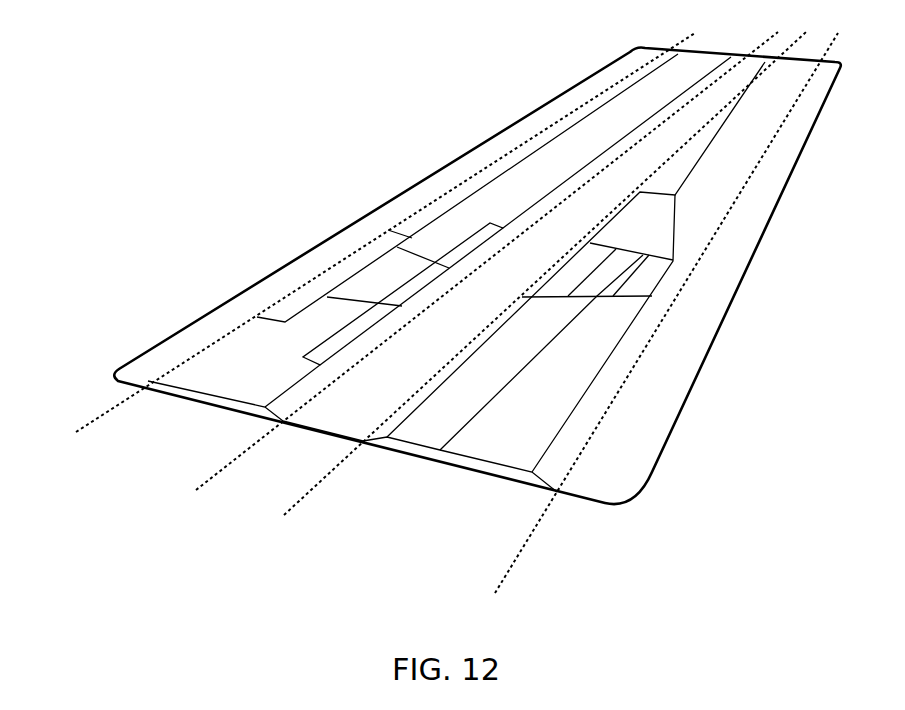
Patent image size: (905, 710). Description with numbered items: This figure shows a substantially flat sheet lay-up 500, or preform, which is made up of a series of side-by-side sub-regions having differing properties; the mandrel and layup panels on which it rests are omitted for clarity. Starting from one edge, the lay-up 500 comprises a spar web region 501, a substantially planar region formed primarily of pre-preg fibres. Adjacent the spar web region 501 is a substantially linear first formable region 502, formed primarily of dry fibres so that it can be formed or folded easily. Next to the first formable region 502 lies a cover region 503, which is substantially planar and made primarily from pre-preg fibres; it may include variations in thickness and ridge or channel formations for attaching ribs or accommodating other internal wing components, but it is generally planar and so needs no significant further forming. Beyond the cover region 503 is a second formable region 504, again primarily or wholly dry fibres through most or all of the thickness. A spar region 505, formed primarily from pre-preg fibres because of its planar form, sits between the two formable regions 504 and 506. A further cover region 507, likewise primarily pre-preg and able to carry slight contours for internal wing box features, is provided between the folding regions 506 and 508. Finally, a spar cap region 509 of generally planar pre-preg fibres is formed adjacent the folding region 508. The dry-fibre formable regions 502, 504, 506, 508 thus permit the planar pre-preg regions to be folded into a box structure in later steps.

The lay-up 500 is at (755, 356).
The spar web region 501 is at (674, 398).
The first formable region 502 is at (546, 522).
The cover region 503 is at (440, 460).
The second formable region 504 is at (288, 515).
The spar region 505 is at (327, 437).
The formable region 506 is at (200, 489).
The further cover region 507 is at (213, 402).
The folding region 508 is at (84, 430).
The spar cap region 509 is at (146, 365).